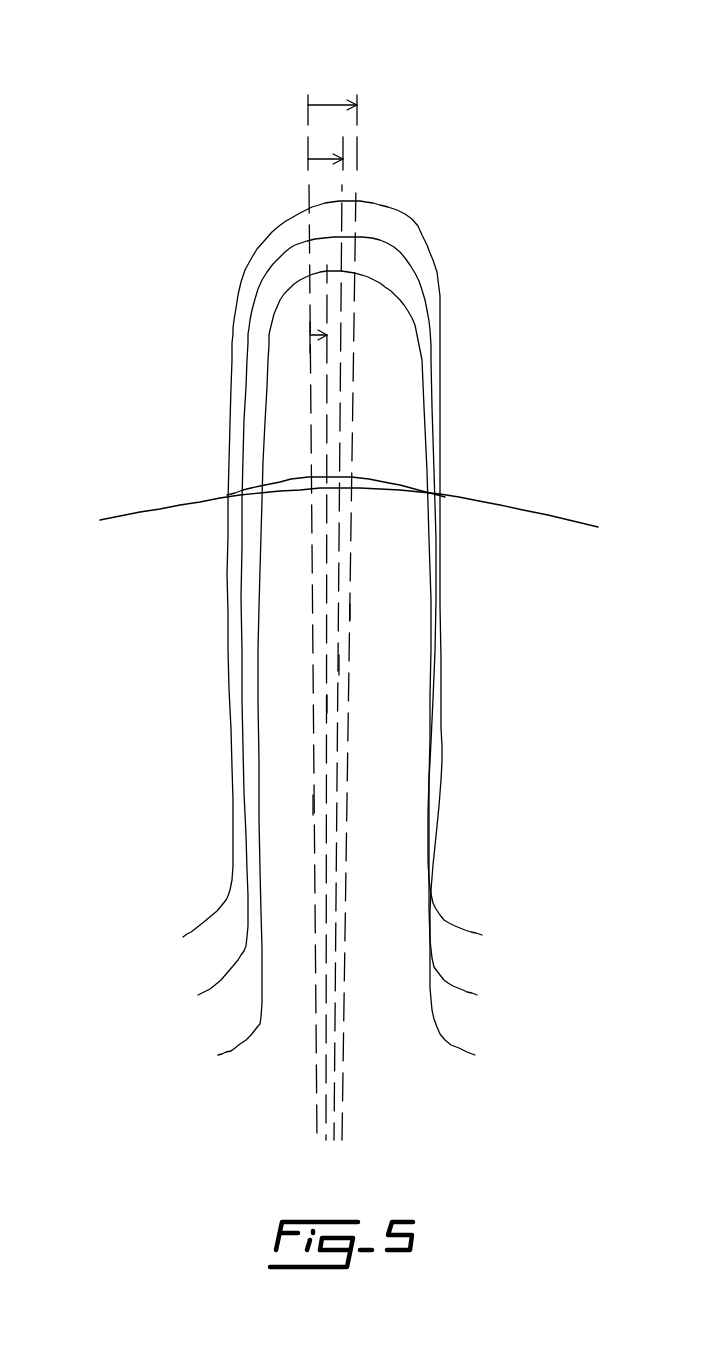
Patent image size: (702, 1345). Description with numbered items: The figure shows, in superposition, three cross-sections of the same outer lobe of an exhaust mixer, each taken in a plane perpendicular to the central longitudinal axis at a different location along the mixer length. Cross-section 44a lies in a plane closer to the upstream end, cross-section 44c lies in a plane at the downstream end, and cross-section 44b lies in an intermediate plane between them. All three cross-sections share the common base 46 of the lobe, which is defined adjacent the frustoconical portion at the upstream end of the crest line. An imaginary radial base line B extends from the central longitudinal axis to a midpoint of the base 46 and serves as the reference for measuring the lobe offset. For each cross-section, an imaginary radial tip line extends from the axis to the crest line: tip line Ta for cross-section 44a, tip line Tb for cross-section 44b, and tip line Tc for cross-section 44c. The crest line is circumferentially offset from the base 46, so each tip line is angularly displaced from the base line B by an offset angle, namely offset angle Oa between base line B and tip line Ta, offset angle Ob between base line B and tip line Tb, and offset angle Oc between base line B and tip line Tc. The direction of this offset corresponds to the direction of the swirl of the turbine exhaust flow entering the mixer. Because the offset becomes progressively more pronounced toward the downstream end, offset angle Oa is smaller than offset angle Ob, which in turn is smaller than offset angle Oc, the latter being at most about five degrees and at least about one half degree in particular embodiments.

The cross-section of outer lobe closest to upstream end 44a is at (378, 663).
The intermediary cross-section of outer lobe 44b is at (394, 611).
The cross-section of outer lobe at downstream end 44c is at (377, 618).
The base 46 is at (349, 476).
The offset angle Oa is at (221, 274).
The offset angle Ob is at (298, 137).
The offset angle Oc is at (307, 65).
The radial tip line Ta is at (172, 727).
The radial tip line Tb is at (464, 630).
The radial tip line Tc is at (456, 681).
The radial base line B is at (175, 834).